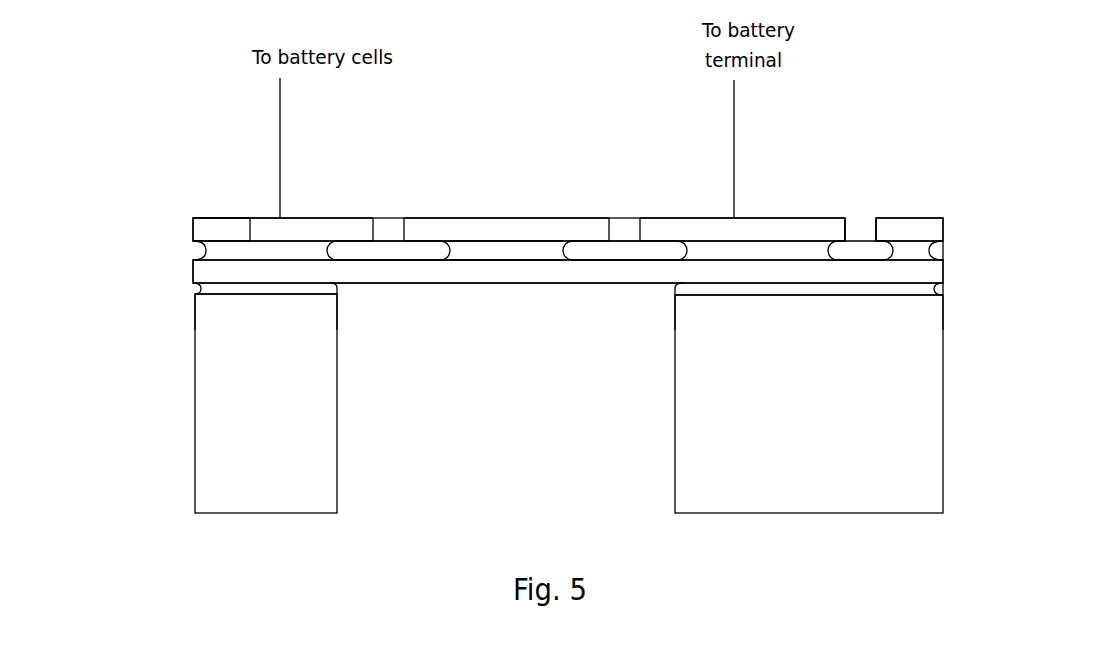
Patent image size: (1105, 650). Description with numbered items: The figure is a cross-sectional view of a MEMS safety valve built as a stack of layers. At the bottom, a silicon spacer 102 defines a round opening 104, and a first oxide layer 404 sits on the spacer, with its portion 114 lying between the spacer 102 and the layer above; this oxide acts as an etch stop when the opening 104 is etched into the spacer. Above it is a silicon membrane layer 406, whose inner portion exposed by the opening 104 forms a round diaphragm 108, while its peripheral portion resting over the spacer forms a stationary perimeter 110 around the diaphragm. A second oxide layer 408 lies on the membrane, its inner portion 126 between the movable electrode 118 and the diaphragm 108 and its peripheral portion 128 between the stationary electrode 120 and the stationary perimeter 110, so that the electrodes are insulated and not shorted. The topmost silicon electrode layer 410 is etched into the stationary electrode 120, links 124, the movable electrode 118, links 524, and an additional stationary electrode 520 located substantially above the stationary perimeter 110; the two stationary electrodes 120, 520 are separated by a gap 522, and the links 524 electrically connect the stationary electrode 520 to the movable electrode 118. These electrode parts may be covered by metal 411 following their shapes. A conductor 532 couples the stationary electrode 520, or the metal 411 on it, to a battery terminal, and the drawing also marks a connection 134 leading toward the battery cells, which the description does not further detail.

The silicon spacer 102 is at (308, 450).
The opening 104 is at (560, 470).
The diaphragm 108 is at (518, 273).
The stationary perimeter 110 is at (220, 285).
The portion of first oxide layer 114 is at (283, 283).
The movable electrode 118 is at (490, 232).
The stationary electrode 120 is at (207, 225).
The links 124 is at (393, 217).
The inner portion of second oxide layer 126 is at (508, 253).
The peripheral portion of second oxide layer 128 is at (310, 248).
The connection to battery cells 134 is at (280, 120).
The first oxide layer 404 is at (945, 283).
The silicon membrane layer 406 is at (190, 260).
The second oxide layer 408 is at (945, 241).
The silicon electrode layer 410 is at (190, 218).
The metal 411 is at (302, 218).
The stationary electrode 520 is at (767, 232).
The gap 522 is at (862, 212).
The links 524 is at (622, 228).
The conductor 532 is at (734, 108).